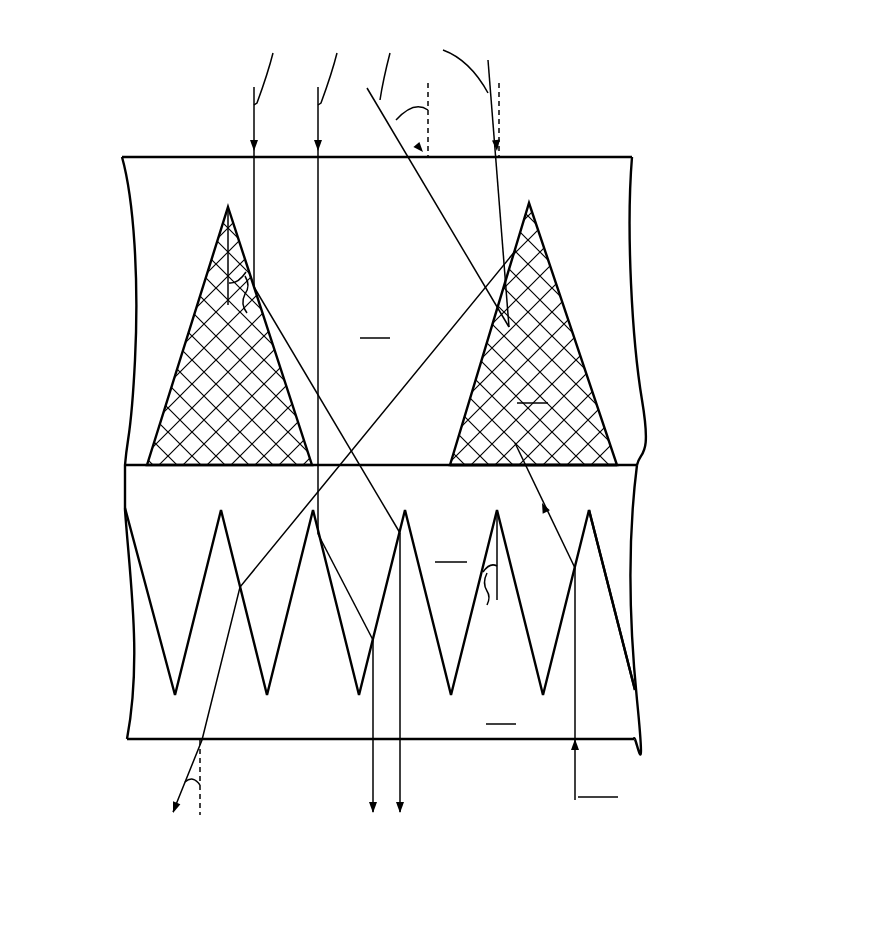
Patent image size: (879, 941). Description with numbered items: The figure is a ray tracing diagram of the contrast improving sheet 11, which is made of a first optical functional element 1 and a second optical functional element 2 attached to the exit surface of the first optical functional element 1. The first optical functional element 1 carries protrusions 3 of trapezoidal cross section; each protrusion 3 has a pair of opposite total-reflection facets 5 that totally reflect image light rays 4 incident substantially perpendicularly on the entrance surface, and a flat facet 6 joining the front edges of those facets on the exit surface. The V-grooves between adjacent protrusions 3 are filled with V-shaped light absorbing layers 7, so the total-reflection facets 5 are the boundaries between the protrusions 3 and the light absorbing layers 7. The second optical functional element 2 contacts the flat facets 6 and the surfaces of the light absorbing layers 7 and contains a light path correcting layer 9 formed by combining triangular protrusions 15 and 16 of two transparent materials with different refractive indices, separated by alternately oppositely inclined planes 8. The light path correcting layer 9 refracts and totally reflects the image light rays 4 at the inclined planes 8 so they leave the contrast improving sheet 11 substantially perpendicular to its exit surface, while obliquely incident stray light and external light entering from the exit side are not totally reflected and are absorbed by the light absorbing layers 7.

The first optical functional element 1 is at (735, 462).
The second optical functional element 2 is at (735, 470).
The protrusions 3 is at (427, 432).
The image light rays 4 is at (253, 185).
The total-reflection facets 5 is at (296, 365).
The flat facet 6 is at (412, 468).
The light absorbing layers 7 is at (567, 388).
The inclined planes 8 is at (603, 552).
The light path correcting layer 9 is at (107, 510).
The contrast improving sheet 11 is at (717, 103).
The protrusions 15 is at (620, 713).
The protrusions 16 is at (613, 493).